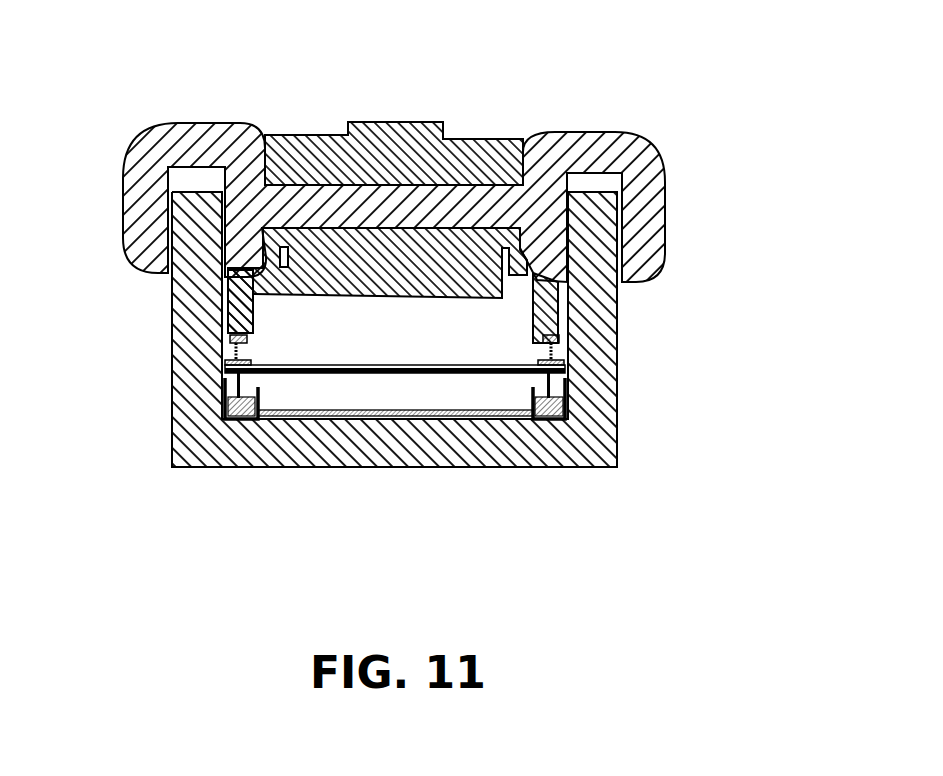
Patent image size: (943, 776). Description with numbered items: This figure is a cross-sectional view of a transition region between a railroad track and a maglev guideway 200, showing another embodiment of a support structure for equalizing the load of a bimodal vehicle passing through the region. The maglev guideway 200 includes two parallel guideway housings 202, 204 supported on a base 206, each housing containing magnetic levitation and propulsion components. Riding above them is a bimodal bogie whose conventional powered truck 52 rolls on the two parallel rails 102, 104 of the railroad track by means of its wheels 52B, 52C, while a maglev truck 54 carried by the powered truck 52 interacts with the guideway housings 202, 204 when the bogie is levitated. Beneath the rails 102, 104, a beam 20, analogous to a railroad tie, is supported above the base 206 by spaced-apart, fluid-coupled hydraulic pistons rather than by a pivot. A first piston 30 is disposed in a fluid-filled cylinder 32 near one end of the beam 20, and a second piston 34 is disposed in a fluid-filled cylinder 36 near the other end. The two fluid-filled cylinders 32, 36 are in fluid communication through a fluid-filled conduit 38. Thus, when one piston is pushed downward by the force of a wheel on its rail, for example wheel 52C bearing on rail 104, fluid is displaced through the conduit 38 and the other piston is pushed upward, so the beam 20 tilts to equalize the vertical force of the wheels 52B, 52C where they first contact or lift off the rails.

The beam 20 is at (431, 373).
The first piston 30 is at (149, 443).
The fluid-filled cylinder 32 is at (228, 400).
The second piston 34 is at (563, 390).
The fluid-filled cylinder 36 is at (603, 433).
The fluid-filled conduit 38 is at (370, 415).
The powered truck 52 is at (305, 126).
The wheel 52B is at (235, 298).
The wheel 52C is at (547, 300).
The maglev truck 54 is at (672, 163).
The rail 102 is at (242, 343).
The rail 104 is at (547, 353).
The maglev guideway 200 is at (424, 372).
The guideway housing 202 is at (185, 352).
The guideway housing 204 is at (597, 403).
The base 206 is at (245, 450).